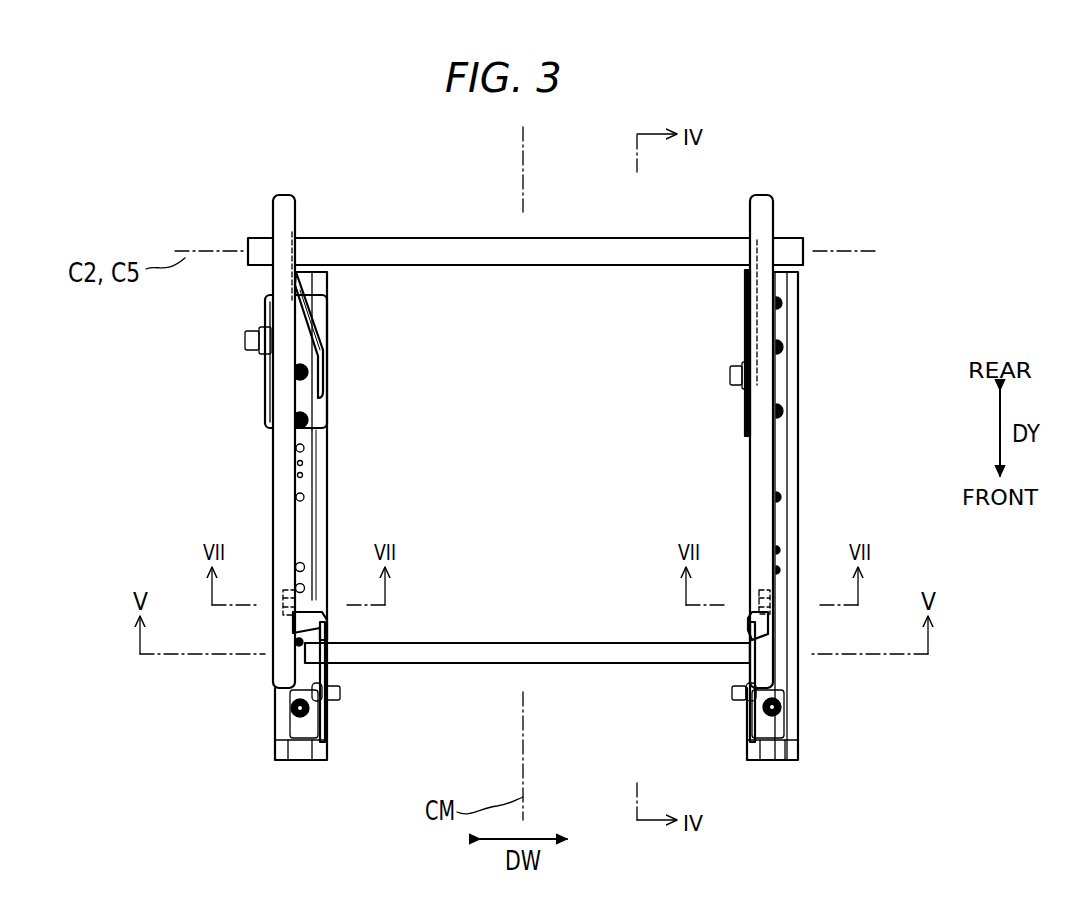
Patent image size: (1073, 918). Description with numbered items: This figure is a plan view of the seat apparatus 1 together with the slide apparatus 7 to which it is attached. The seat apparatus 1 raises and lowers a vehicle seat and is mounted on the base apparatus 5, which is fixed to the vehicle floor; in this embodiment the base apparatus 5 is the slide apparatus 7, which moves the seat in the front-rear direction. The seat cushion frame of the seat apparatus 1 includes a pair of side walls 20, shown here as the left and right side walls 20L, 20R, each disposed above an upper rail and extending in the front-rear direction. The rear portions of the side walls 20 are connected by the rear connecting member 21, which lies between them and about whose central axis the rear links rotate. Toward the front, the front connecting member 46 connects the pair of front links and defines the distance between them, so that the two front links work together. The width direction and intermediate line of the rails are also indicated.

The seat apparatus 1 is at (826, 224).
The base apparatus 5 is at (827, 304).
The slide apparatus 7 is at (827, 304).
The side wall 20 is at (528, 477).
The left side wall 20L is at (270, 477).
The right side wall 20R is at (789, 477).
The rear connecting member 21 is at (558, 238).
The front connecting member 46 is at (491, 643).